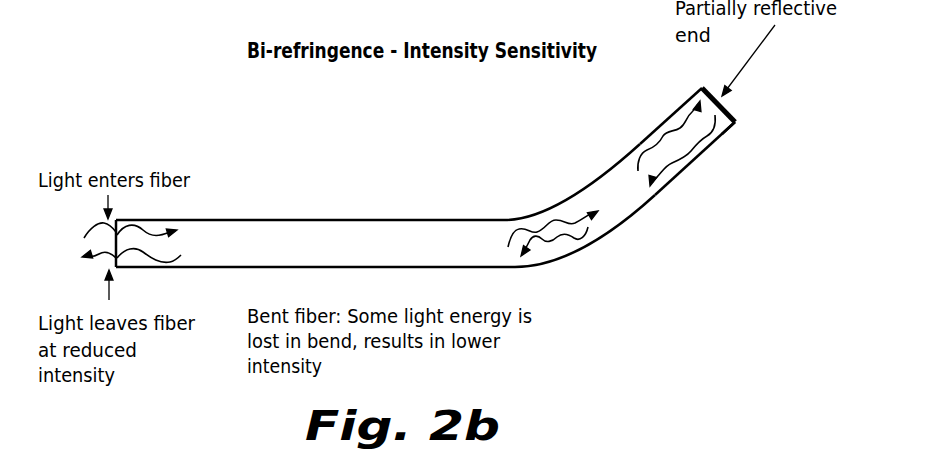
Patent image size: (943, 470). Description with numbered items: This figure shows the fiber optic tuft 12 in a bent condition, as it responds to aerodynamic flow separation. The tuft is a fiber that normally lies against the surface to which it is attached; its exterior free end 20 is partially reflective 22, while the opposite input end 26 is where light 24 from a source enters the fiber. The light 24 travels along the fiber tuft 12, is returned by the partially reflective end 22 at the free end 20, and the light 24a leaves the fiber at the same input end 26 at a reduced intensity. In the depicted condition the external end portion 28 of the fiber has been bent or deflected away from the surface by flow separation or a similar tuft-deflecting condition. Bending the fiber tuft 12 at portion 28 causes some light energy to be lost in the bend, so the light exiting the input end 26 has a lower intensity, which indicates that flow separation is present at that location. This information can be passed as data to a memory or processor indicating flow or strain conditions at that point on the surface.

The fiber tuft 12 is at (294, 220).
The exterior free end 20 is at (737, 123).
The partially reflective end 22 is at (732, 110).
The light 24 is at (84, 238).
The light leaving the fiber 24a is at (181, 256).
The input end 26 is at (116, 245).
The external end portion 28 is at (667, 188).